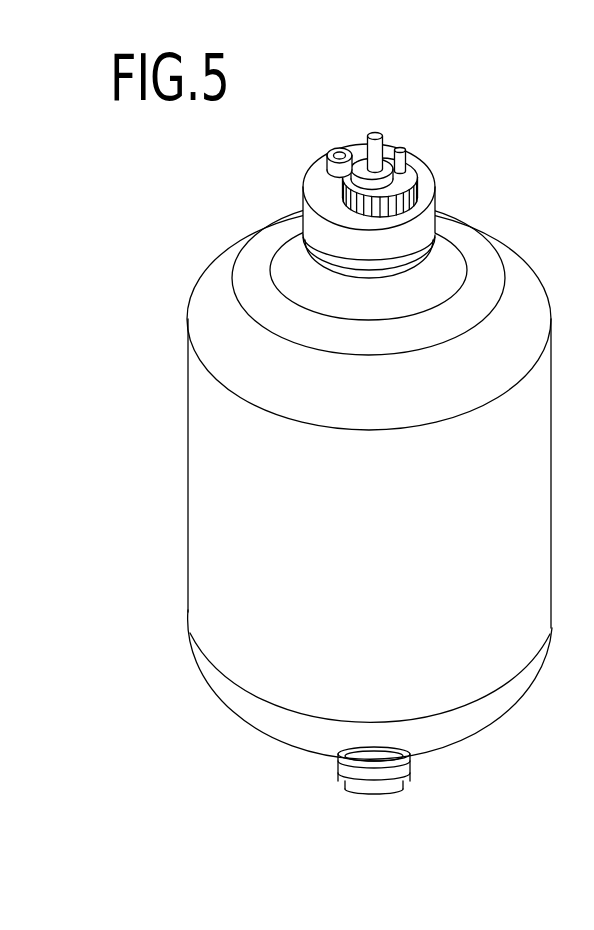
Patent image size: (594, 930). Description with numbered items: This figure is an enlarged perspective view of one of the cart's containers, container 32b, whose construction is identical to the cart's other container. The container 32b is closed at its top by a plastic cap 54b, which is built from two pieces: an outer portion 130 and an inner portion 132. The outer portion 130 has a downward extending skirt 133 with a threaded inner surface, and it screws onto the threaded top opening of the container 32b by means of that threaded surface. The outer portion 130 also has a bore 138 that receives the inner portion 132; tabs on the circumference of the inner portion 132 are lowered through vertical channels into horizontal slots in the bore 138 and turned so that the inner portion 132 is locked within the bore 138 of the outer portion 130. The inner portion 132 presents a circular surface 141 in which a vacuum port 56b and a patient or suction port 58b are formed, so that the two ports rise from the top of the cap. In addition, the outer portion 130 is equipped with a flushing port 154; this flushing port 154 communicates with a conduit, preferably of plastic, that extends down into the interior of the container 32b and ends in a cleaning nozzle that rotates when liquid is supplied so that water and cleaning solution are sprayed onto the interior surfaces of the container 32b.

The container 32b is at (182, 278).
The plastic cap 54b is at (386, 162).
The vacuum port 56b is at (376, 138).
The patient or suction port 58b is at (401, 150).
The outer portion 130 is at (425, 185).
The inner portion 132 is at (393, 170).
The downward extending skirt 133 is at (383, 254).
The bore 138 is at (403, 210).
The circular surface 141 is at (410, 182).
The flushing port 154 is at (333, 170).